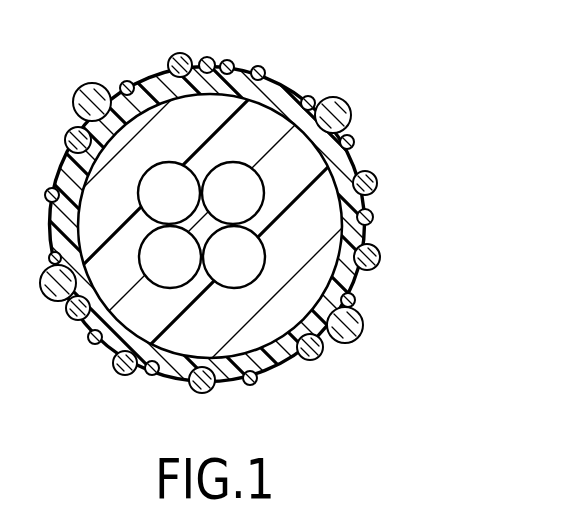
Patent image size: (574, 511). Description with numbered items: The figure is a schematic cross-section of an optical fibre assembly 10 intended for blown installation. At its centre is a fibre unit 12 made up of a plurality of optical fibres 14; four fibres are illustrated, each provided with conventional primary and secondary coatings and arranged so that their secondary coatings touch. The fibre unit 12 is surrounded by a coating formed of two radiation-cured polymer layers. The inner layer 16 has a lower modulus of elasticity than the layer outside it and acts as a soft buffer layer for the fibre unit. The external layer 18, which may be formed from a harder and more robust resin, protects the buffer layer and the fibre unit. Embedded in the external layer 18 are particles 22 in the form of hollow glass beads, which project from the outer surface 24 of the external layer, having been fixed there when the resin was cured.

The optical fibre assembly 10 is at (287, 255).
The fibre unit 12 is at (287, 198).
The optical fibres 14 is at (251, 277).
The inner layer 16 is at (307, 250).
The external layer 18 is at (360, 166).
The particles 22 is at (312, 98).
The outer surface 24 is at (288, 366).